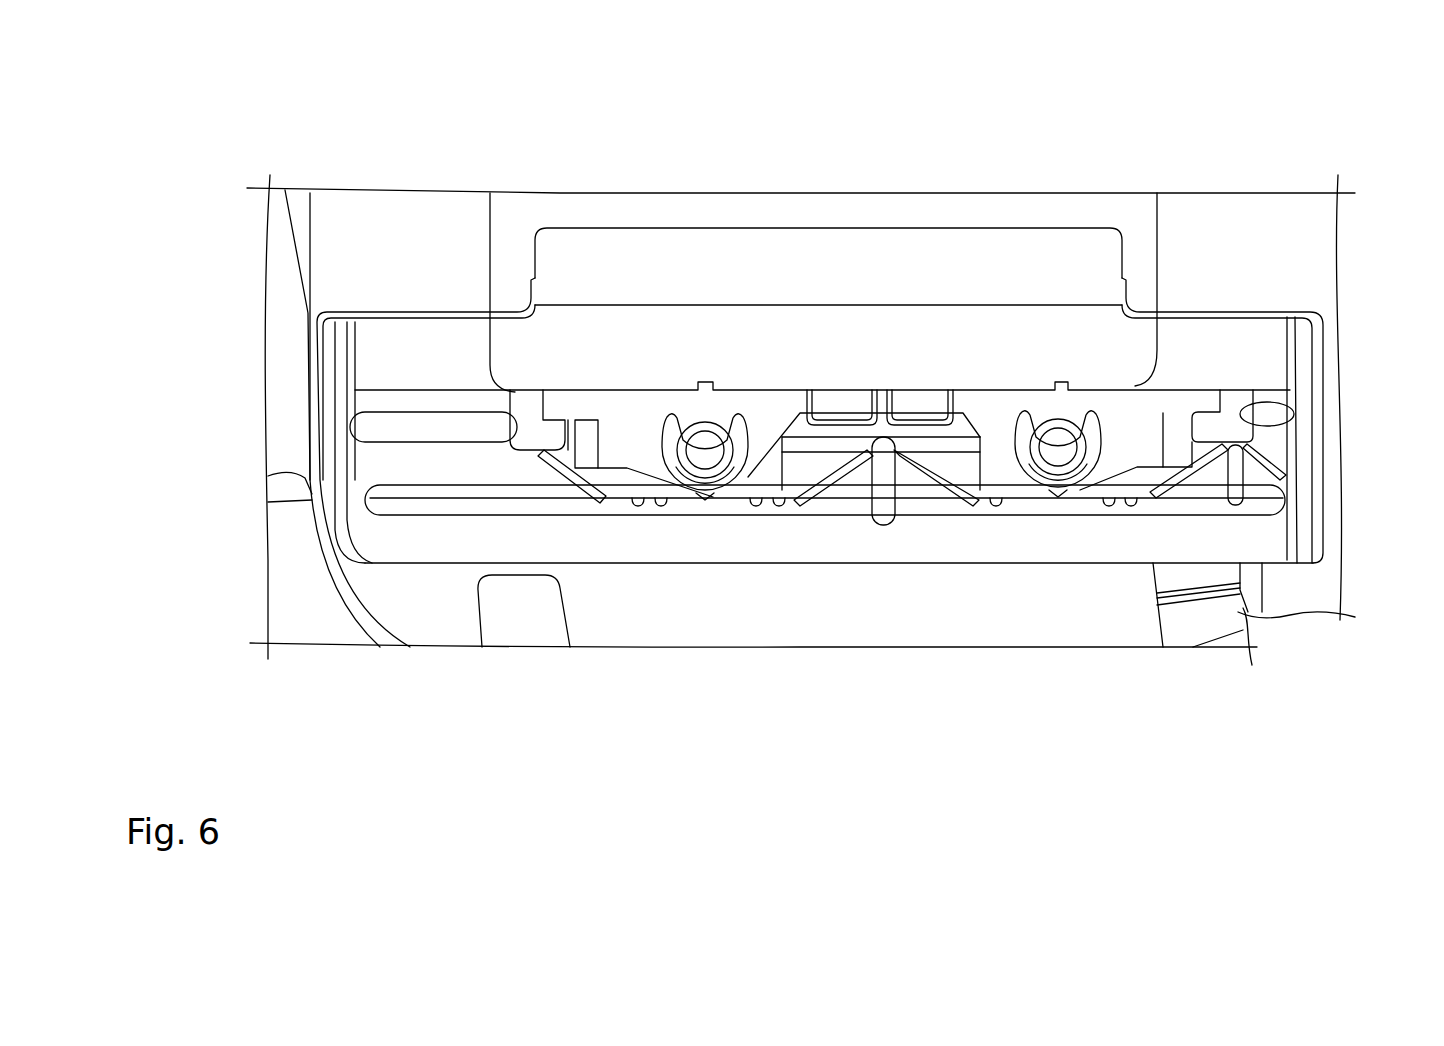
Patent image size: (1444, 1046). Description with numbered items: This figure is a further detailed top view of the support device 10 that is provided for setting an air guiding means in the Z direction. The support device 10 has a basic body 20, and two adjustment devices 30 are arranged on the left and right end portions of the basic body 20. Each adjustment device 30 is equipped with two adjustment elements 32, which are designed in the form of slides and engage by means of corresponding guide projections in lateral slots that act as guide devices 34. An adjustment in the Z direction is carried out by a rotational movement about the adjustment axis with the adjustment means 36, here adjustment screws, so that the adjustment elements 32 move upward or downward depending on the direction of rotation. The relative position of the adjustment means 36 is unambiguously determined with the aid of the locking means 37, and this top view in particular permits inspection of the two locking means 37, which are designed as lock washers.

The support device 10 is at (352, 125).
The basic body 20 is at (538, 213).
The adjustment device 30 is at (413, 542).
The adjustment element 32 is at (620, 453).
The guide device 34 is at (525, 423).
The adjustment means 36 is at (705, 453).
The locking means 37 is at (713, 483).